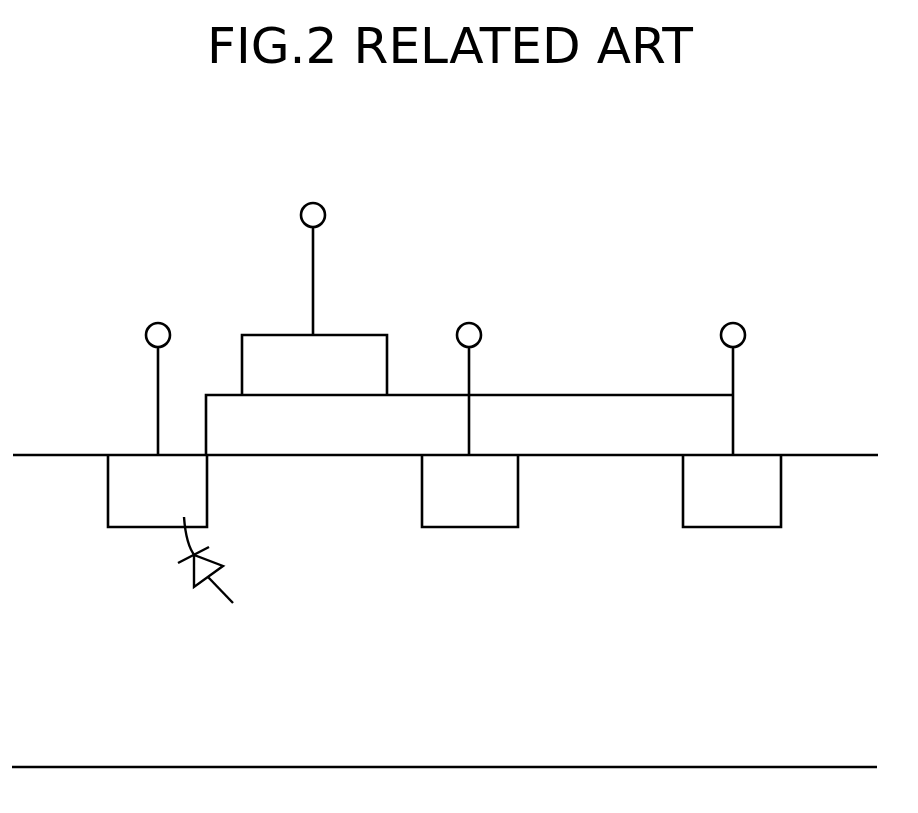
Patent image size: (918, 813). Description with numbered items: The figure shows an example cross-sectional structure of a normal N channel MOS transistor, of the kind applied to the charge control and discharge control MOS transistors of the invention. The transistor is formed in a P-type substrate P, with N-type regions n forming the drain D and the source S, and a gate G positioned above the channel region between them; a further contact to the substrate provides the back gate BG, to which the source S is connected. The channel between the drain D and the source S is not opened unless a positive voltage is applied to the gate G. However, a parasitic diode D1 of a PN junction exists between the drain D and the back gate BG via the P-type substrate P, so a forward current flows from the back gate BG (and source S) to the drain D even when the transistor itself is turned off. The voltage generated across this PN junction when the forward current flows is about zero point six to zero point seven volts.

The drain D is at (158, 369).
The gate G is at (313, 249).
The source S is at (469, 369).
The back gate BG is at (734, 369).
The parasitic diode D1 is at (218, 564).
The N-type region n is at (313, 491).
The P-type substrate P is at (444, 611).